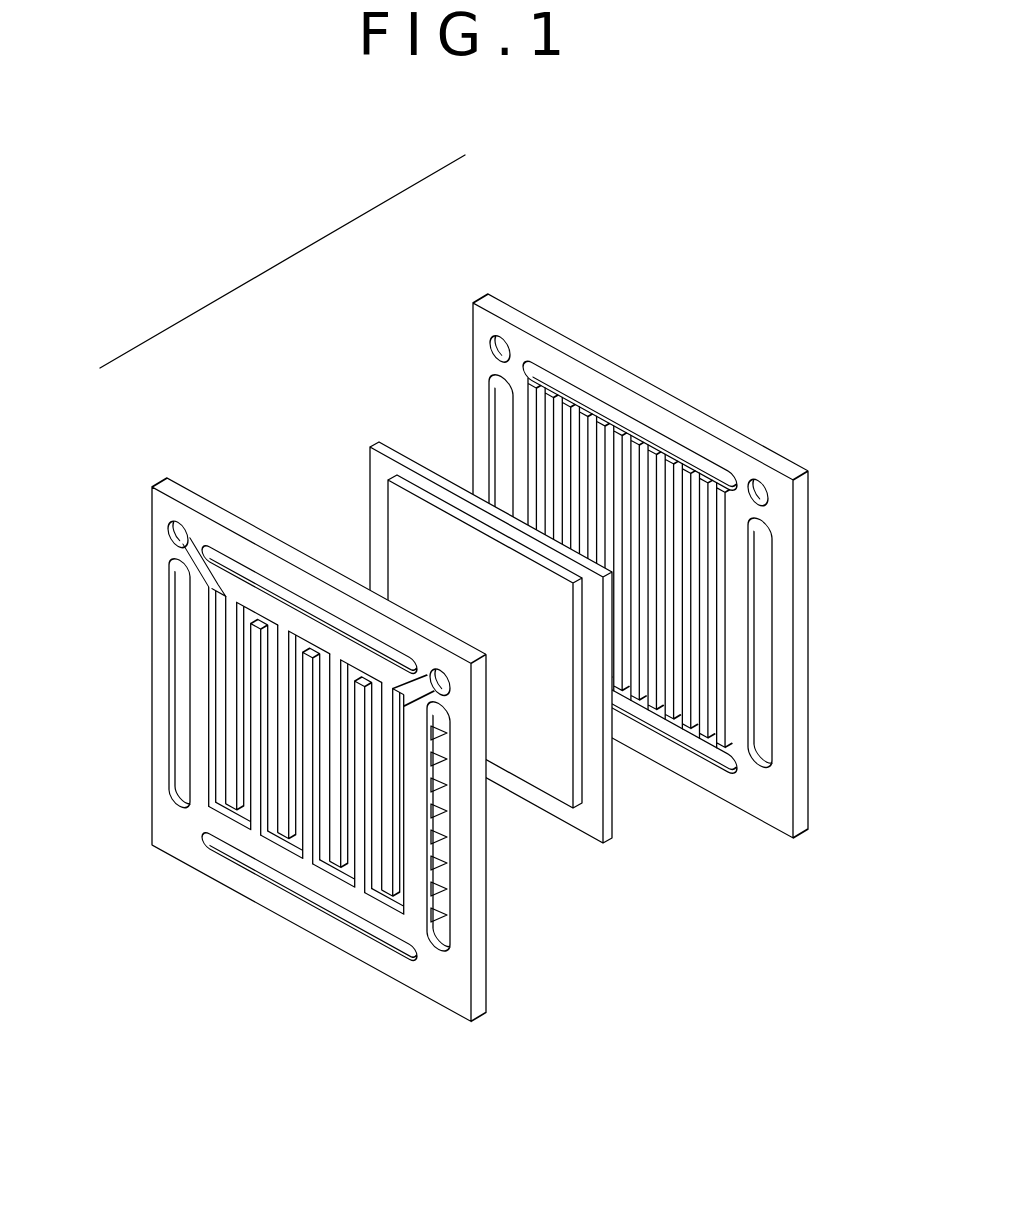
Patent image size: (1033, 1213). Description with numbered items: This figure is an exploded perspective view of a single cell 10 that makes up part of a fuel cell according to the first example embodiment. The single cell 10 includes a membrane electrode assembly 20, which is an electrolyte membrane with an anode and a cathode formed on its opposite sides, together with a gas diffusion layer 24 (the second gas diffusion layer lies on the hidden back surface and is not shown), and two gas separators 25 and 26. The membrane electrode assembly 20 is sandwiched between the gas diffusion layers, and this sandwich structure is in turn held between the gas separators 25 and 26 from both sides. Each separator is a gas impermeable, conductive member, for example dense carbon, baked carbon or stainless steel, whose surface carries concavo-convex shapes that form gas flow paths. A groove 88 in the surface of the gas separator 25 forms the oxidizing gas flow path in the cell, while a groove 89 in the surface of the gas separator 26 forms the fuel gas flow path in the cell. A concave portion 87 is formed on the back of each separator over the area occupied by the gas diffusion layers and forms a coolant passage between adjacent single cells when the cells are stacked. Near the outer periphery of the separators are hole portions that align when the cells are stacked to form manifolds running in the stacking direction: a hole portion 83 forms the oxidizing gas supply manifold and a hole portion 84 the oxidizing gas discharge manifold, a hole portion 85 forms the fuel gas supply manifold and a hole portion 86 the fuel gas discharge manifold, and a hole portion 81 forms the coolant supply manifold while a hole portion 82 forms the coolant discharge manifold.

The single cell 10 is at (288, 262).
The membrane electrode assembly 20 is at (414, 468).
The gas diffusion layer 24 is at (390, 518).
The gas separator 25 is at (500, 302).
The gas separator 26 is at (178, 483).
The hole portion 81 is at (167, 532).
The hole portion 82 is at (449, 686).
The hole portion 83 is at (250, 566).
The hole portion 84 is at (337, 920).
The hole portion 85 is at (176, 682).
The hole portion 86 is at (452, 897).
The concave portion 87 is at (297, 842).
The groove 88 is at (661, 710).
The groove 89 is at (452, 834).